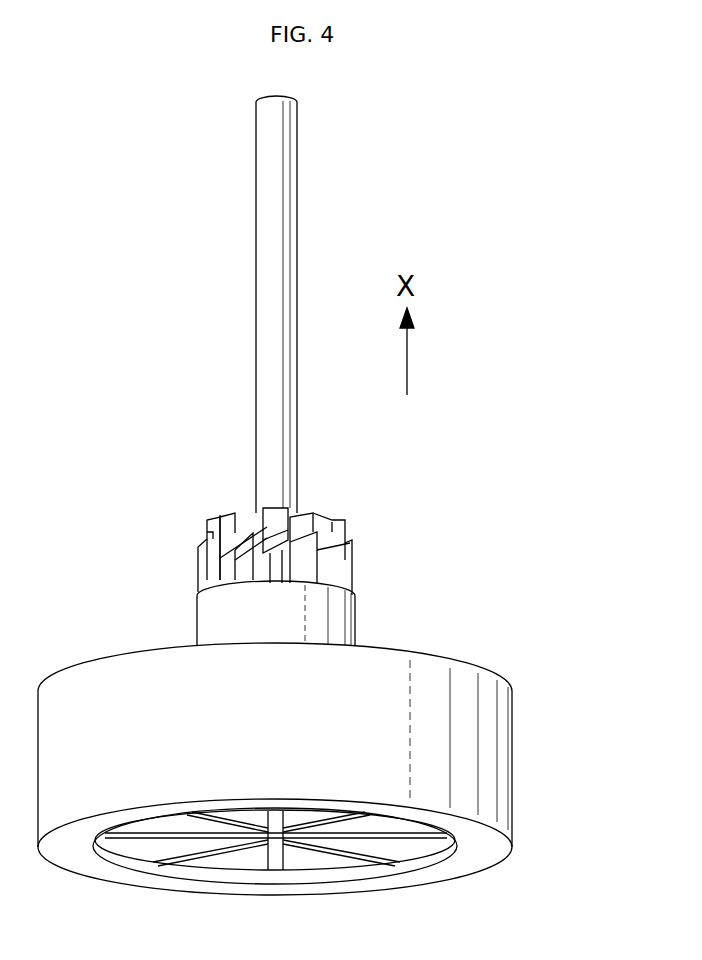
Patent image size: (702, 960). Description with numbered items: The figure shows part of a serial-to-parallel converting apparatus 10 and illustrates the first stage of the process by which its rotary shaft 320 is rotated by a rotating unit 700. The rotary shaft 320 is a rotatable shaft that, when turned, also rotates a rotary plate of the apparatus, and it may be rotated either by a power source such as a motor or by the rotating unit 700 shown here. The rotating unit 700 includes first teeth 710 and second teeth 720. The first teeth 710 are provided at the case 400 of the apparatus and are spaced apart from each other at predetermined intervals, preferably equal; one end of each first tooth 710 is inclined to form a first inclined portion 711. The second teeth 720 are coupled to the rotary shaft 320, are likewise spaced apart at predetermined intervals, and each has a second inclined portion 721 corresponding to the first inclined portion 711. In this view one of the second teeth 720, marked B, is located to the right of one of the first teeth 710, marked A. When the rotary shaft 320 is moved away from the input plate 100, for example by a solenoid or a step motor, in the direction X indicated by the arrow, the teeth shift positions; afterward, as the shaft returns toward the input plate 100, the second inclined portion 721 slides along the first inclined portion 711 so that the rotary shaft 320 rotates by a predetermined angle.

The serial-to-parallel converting apparatus 10 is at (98, 228).
The input plate 100 is at (327, 862).
The rotary shaft 320 is at (265, 291).
The case 400 is at (503, 734).
The rotating unit 700 is at (177, 466).
The first teeth 710 is at (242, 574).
The first inclined portion 711 is at (252, 530).
The second teeth 720 is at (277, 512).
The second inclined portion 721 is at (281, 552).